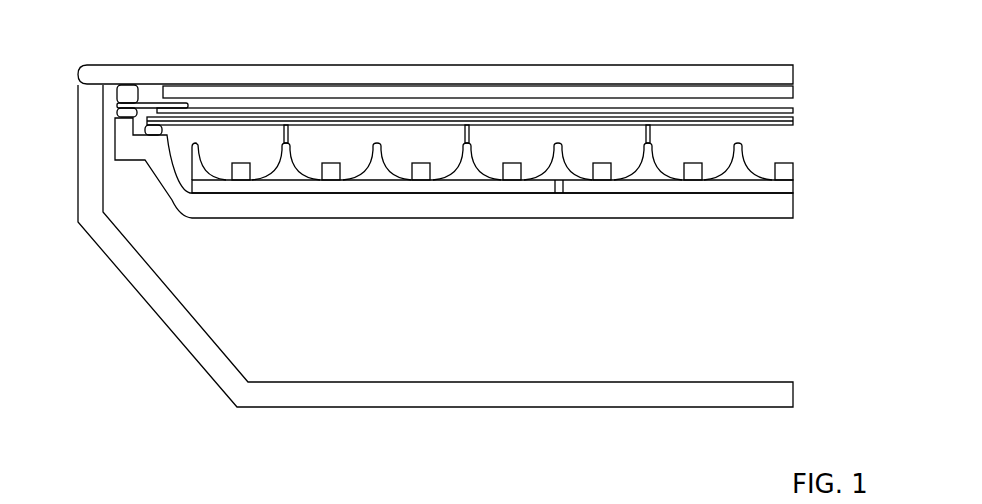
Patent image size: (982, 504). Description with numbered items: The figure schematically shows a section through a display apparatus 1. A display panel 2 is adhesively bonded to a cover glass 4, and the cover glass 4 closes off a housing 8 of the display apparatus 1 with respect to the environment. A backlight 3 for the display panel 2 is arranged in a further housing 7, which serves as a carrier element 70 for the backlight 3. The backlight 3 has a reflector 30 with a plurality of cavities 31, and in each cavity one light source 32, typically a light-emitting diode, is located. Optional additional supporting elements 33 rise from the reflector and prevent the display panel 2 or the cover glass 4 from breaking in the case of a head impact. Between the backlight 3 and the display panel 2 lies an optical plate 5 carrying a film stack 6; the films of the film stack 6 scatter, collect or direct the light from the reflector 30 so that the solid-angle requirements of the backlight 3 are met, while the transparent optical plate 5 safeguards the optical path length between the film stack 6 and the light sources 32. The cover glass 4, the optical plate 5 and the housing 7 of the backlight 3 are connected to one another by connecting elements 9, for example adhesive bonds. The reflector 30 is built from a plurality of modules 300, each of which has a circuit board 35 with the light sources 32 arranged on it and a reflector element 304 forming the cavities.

The display apparatus 1 is at (150, 339).
The display panel 2 is at (788, 92).
The backlight 3 is at (648, 247).
The cover glass 4 is at (492, 72).
The optical plate 5 is at (780, 123).
The film stack 6 is at (792, 110).
The housing 7 is at (454, 215).
The carrier element 70 is at (293, 207).
The housing 8 is at (415, 395).
The connecting elements 9 is at (148, 128).
The reflector 30 is at (520, 197).
The cavities 31 is at (403, 148).
The light source 32 is at (510, 180).
The supporting elements 33 is at (468, 133).
The circuit board 35 is at (368, 187).
The modules 300 is at (308, 193).
The reflector element 304 is at (282, 175).